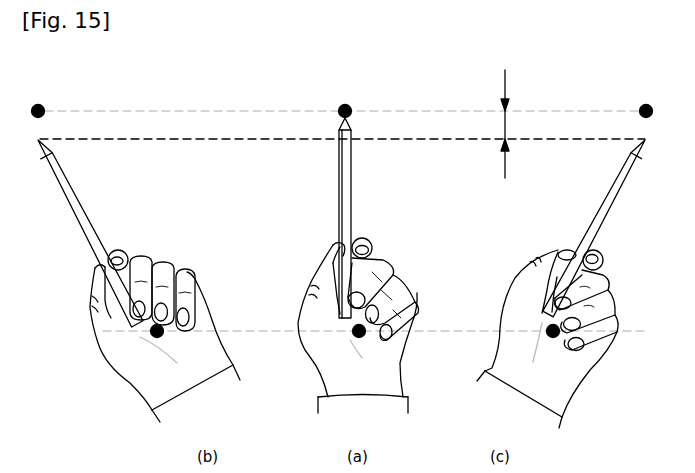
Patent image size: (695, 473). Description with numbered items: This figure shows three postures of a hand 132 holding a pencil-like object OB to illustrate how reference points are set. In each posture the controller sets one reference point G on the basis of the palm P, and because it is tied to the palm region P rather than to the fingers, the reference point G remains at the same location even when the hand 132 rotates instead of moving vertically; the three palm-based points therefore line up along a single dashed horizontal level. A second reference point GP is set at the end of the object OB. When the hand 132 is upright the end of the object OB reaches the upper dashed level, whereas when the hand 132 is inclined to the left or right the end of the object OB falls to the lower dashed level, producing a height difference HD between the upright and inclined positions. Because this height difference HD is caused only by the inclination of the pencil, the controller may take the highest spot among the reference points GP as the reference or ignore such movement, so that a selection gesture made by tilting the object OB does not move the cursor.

The reference point GP is at (346, 104).
The height difference HD is at (517, 124).
The object OB is at (343, 188).
The hand 132 is at (432, 234).
The reference point G is at (347, 337).
The palm P is at (368, 357).